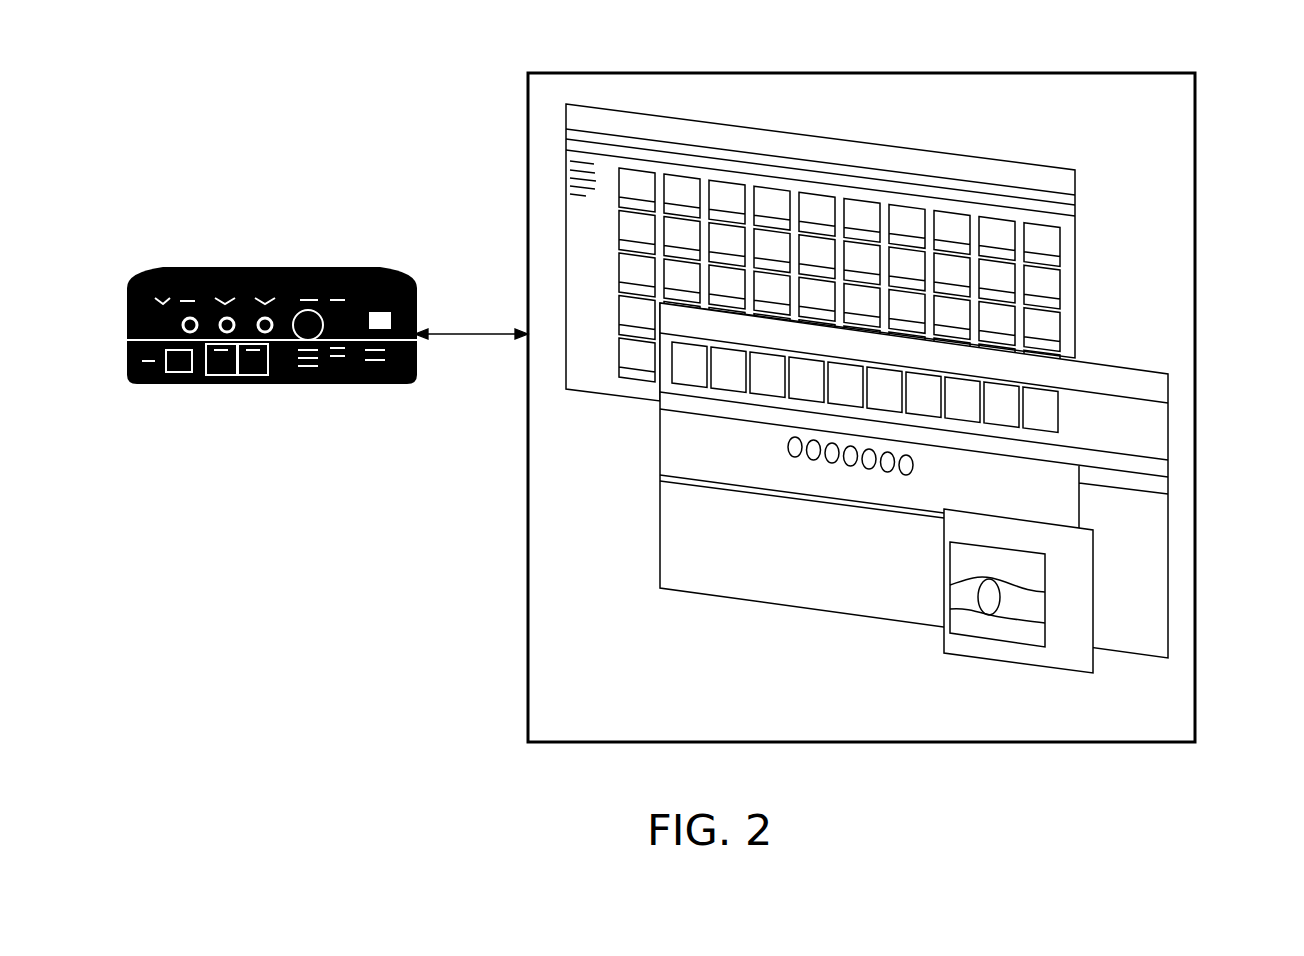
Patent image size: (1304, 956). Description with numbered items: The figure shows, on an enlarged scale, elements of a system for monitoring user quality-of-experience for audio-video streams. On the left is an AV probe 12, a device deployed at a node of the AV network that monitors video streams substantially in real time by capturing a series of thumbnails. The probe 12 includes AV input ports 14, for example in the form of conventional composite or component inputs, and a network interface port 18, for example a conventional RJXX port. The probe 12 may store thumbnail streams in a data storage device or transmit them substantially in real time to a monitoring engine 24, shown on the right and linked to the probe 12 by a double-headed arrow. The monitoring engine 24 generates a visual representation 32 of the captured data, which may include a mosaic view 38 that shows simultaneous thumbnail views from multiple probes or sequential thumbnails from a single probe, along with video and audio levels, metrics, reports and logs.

The AV probe 12 is at (272, 317).
The AV input port 14 is at (205, 281).
The network interface port 18 is at (222, 352).
The monitoring engine 24 is at (1247, 203).
The visual representation 32 is at (867, 388).
The mosaic view 38 is at (606, 247).